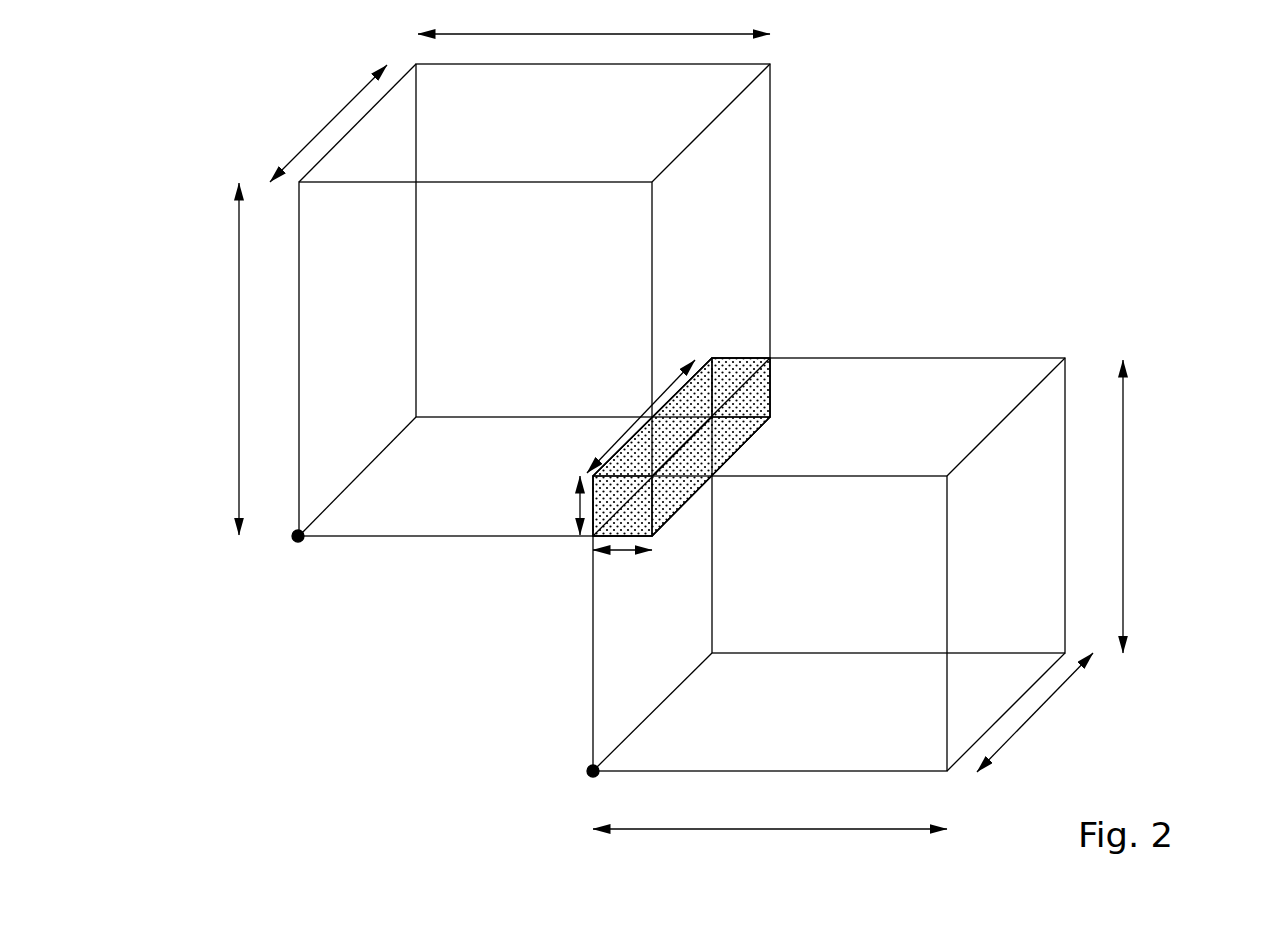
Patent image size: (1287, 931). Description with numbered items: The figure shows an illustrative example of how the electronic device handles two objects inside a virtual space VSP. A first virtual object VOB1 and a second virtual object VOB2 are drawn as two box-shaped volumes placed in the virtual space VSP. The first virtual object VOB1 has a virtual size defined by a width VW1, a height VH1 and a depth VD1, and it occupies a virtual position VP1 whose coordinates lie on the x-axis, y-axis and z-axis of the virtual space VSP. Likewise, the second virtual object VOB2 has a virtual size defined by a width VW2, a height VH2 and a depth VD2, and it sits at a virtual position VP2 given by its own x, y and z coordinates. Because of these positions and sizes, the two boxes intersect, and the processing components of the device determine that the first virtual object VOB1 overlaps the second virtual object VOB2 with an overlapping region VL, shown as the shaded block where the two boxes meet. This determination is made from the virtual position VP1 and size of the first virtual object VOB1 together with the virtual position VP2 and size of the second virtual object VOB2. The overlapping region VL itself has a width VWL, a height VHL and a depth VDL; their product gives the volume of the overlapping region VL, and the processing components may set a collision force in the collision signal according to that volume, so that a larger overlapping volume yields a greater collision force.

The virtual space VSP is at (153, 90).
The first virtual object VOB1 is at (771, 182).
The second virtual object VOB2 is at (1067, 380).
The overlapping region VL is at (771, 388).
The virtual position of the first virtual object VP1 is at (378, 554).
The virtual position of the second virtual object VP2 is at (472, 782).
The width of the first virtual object VW1 is at (594, 18).
The depth of the first virtual object VD1 is at (326, 123).
The height of the first virtual object VH1 is at (198, 359).
The width of the second virtual object VW2 is at (770, 850).
The depth of the second virtual object VD2 is at (1037, 712).
The height of the second virtual object VH2 is at (1165, 506).
The width of the overlapping region VWL is at (622, 568).
The depth of the overlapping region VDL is at (641, 416).
The height of the overlapping region VHL is at (550, 505).